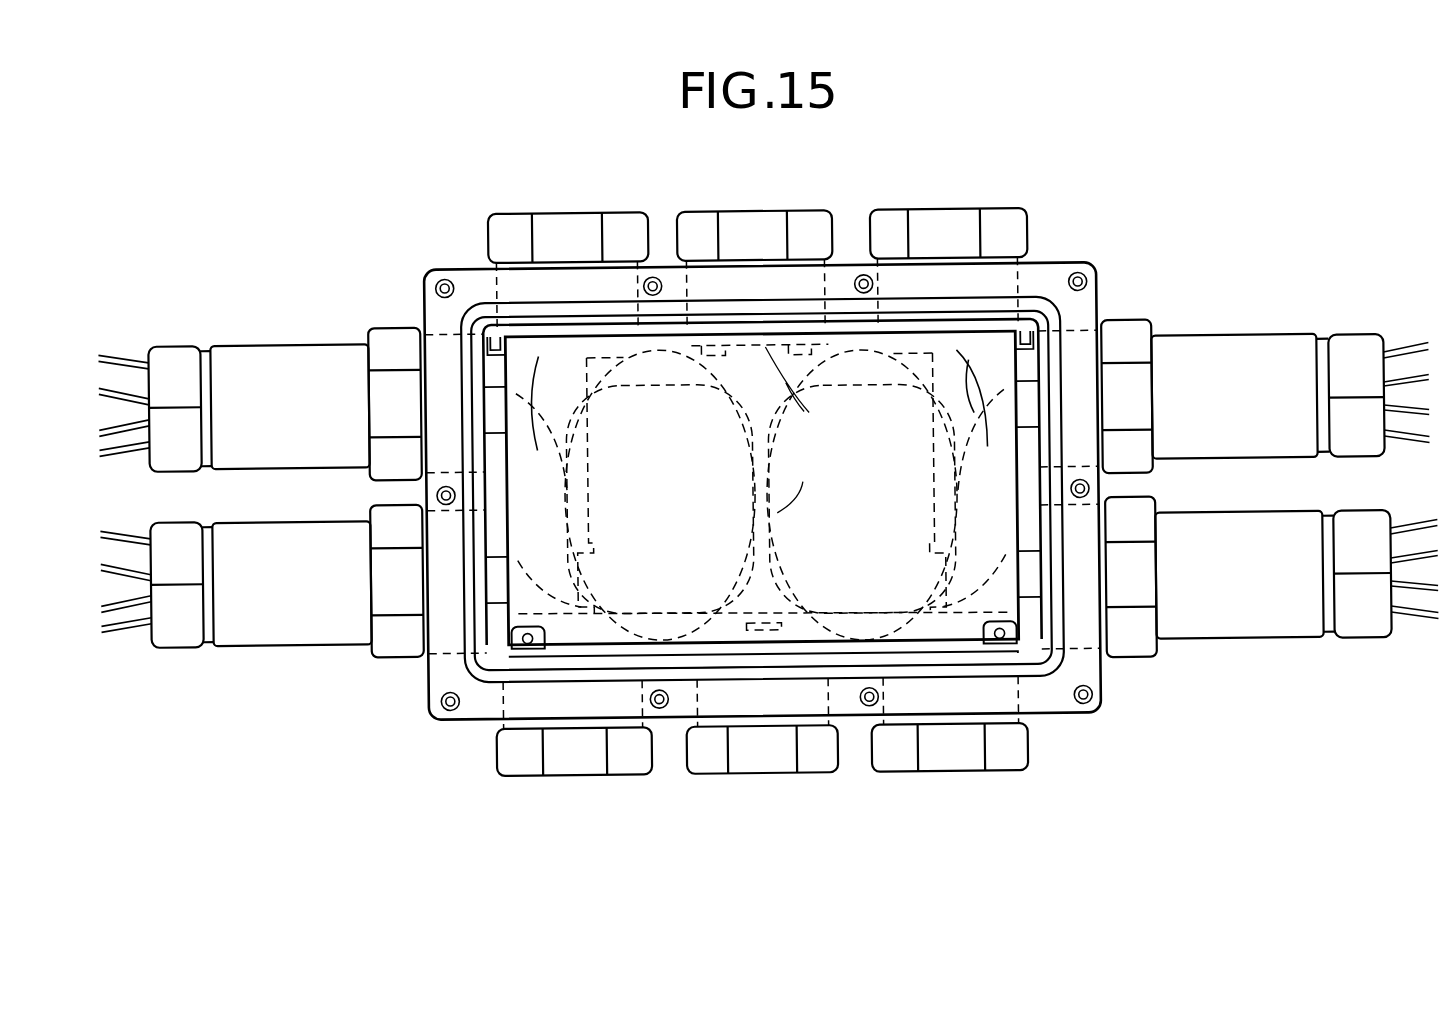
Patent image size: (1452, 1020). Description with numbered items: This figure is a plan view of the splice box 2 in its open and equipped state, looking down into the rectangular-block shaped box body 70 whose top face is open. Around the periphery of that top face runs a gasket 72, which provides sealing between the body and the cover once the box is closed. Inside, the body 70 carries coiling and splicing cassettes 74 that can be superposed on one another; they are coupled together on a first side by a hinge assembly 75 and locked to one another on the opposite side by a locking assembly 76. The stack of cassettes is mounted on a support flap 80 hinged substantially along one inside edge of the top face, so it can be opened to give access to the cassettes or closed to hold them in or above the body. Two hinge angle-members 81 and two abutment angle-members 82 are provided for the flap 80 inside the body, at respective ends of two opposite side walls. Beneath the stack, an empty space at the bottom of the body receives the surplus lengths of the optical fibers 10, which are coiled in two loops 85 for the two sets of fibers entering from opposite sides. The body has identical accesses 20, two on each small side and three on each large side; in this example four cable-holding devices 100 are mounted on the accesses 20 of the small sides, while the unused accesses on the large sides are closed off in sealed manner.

The splice box 2 is at (414, 250).
The box body 70 is at (1040, 266).
The hinge angle-member 81 is at (487, 357).
The abutment angle-member 82 is at (512, 665).
The support flap 80 is at (1033, 672).
The gasket 72 is at (957, 673).
The coiling and splicing cassette 74 is at (663, 347).
The hinge assembly 75 is at (885, 492).
The loop 85 is at (760, 500).
The locking assembly 76 is at (770, 608).
The optical fiber 10 is at (517, 395).
The access 20 is at (457, 655).
The device 100 is at (277, 552).